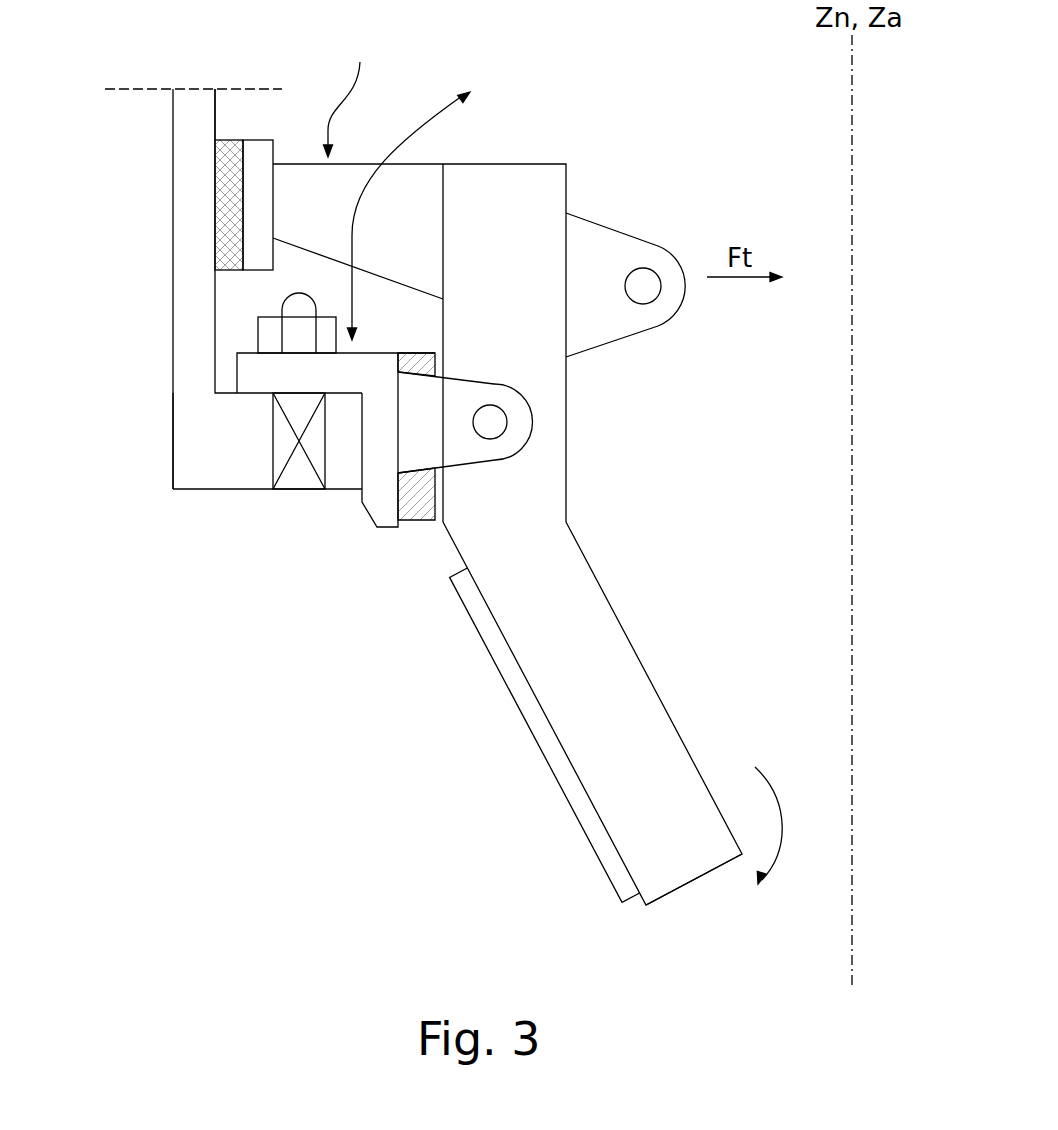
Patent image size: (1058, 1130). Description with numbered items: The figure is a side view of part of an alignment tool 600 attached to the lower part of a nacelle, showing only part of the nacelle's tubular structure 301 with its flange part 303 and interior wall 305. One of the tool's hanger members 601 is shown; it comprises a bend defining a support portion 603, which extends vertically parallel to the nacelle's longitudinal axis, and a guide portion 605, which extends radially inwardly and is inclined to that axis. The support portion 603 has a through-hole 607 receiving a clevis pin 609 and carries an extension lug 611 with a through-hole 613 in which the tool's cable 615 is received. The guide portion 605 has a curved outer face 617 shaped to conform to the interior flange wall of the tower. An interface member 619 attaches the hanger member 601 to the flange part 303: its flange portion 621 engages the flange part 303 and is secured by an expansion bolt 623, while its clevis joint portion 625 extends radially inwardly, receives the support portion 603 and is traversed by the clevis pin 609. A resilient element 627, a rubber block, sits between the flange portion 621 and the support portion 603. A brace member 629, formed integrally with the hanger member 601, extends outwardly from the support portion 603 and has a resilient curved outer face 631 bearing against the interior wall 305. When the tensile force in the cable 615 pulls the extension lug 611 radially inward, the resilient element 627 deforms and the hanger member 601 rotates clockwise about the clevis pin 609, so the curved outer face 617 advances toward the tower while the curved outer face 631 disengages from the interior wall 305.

The alignment tool 600 is at (276, 780).
The tubular structure 301 is at (162, 198).
The flange part 303 is at (202, 448).
The interior wall 305 is at (215, 112).
The curved outer face 631 is at (225, 178).
The brace member 629 is at (353, 98).
The interface member 619 is at (425, 203).
The support portion 603 is at (487, 193).
The extension lug 611 is at (590, 246).
The through-hole 613 is at (651, 268).
The cable 615 is at (643, 286).
The flange portion 621 is at (267, 375).
The expansion bolt 623 is at (295, 415).
The clevis joint portion 625 is at (430, 431).
The resilient element 627 is at (418, 506).
The through-hole 607 is at (507, 410).
The clevis pin 609 is at (490, 422).
The hanger member 601 is at (630, 595).
The guide portion 605 is at (670, 848).
The curved outer face 617 is at (528, 727).